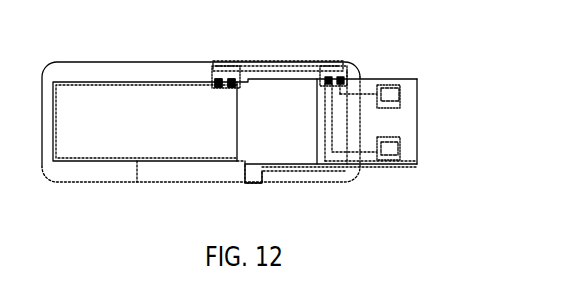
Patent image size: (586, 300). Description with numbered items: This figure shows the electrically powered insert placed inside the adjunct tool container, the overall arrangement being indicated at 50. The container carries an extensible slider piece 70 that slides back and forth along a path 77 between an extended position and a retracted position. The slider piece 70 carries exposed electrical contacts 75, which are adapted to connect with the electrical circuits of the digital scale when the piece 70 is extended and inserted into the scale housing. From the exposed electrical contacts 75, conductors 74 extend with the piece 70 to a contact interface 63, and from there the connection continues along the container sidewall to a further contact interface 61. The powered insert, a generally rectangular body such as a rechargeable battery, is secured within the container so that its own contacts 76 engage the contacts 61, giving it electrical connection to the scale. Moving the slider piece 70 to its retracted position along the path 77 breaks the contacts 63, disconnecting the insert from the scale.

The electronic device assembly 50 is at (359, 198).
The exposed electrical contacts 75 is at (150, 109).
The contact interface 61 is at (218, 79).
The contacts 76 is at (243, 52).
The contact interface 63 is at (341, 76).
The conductors 74 is at (350, 151).
The extensible slider piece 70 is at (419, 165).
The path 77 is at (420, 122).